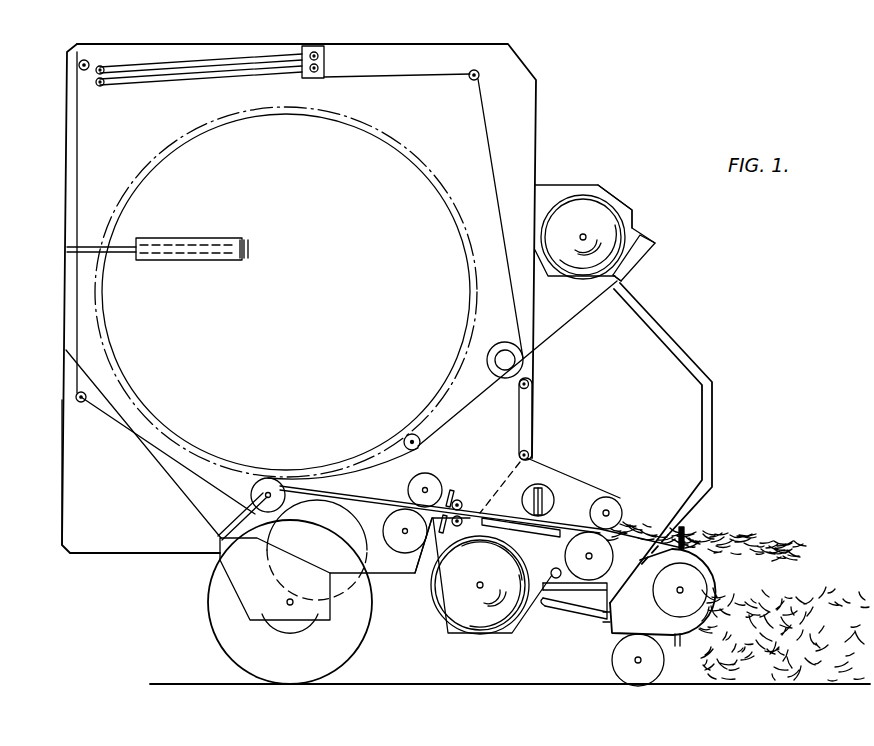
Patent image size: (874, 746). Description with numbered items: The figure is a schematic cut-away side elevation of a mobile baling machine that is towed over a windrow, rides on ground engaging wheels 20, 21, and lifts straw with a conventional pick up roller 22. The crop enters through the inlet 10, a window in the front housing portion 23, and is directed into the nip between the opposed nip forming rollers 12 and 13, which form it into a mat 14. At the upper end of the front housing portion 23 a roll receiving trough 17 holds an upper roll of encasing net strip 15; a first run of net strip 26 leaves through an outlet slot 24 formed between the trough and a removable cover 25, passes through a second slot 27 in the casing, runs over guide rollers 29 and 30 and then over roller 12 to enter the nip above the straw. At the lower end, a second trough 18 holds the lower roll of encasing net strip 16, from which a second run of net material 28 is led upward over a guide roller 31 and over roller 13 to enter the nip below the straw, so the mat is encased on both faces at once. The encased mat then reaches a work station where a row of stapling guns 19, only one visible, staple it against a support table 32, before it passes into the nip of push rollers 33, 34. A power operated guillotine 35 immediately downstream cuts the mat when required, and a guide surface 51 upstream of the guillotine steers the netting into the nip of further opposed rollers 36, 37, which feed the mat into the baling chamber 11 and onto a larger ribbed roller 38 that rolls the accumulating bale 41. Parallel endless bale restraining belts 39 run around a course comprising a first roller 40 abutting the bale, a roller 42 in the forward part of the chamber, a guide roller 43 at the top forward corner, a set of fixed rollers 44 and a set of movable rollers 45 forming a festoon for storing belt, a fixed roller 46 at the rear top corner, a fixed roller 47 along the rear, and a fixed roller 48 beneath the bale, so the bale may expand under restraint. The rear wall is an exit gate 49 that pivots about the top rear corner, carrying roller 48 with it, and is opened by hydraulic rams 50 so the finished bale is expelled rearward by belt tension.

The inlet 10 is at (698, 518).
The baling chamber 11 is at (80, 216).
The nip forming roller 12 is at (612, 498).
The nip forming roller 13 is at (598, 566).
The mat 14 is at (365, 494).
The upper roll of encasing net strip 15 is at (600, 222).
The lower roll of encasing net strip 16 is at (482, 612).
The roll receiving trough 17 is at (562, 280).
The roll receiving trough 18 is at (508, 632).
The stapling gun 19 is at (548, 488).
The ground engaging wheel 20 is at (230, 614).
The ground engaging wheel 21 is at (620, 664).
The pick up roller 22 is at (718, 604).
The front housing portion 23 is at (708, 452).
The outlet slot 24 is at (650, 246).
The removable cover 25 is at (634, 210).
The first run of net strip 26 is at (578, 330).
The second slot 27 is at (626, 280).
The second run of net material 28 is at (540, 582).
The guide roller 29 is at (530, 385).
The guide roller 30 is at (529, 456).
The guide roller 31 is at (556, 580).
The support table 32 is at (520, 534).
The push roller 33 is at (462, 516).
The push roller 34 is at (452, 532).
The power operated guillotine 35 is at (460, 500).
The roller 36 is at (430, 478).
The roller 37 is at (401, 546).
The ribbed roller 38 is at (356, 512).
The bale restraining belt 39 is at (400, 76).
The roller 40 is at (404, 440).
The accumulating bale 41 is at (306, 312).
The roller 42 is at (498, 354).
The guide roller 43 is at (480, 78).
The fixed rollers 44 is at (103, 84).
The movable rollers 45 is at (325, 74).
The fixed roller 46 is at (80, 67).
The fixed roller 47 is at (82, 404).
The fixed roller 48 is at (272, 490).
The exit gate 49 is at (76, 464).
The hydraulic ram 50 is at (214, 238).
The guide surface 51 is at (420, 576).